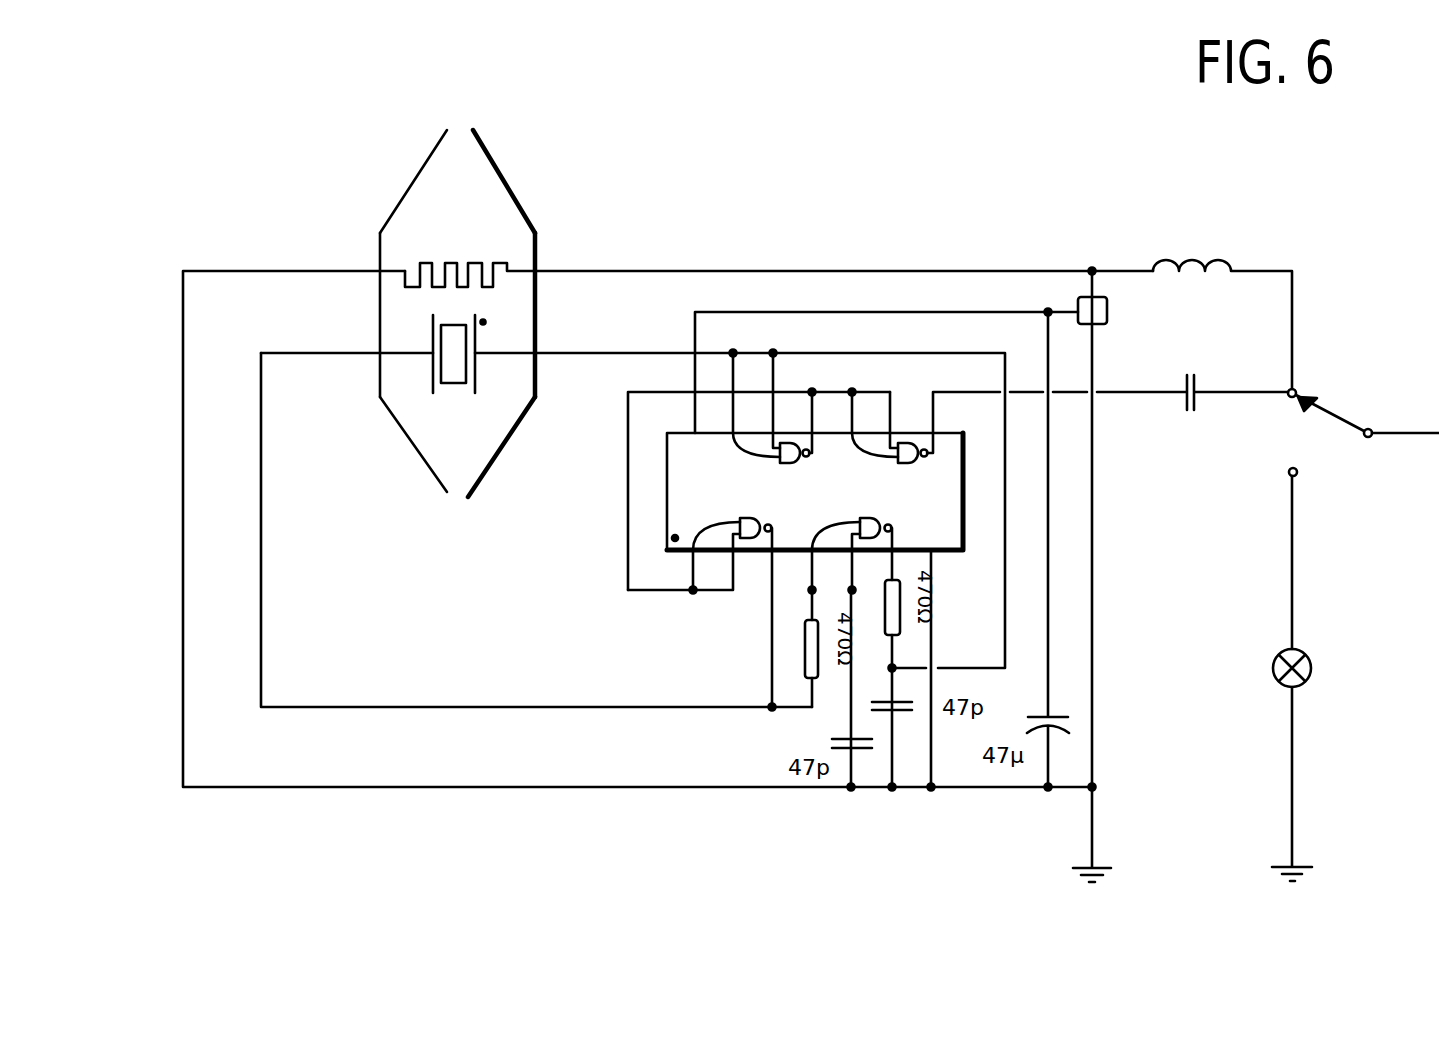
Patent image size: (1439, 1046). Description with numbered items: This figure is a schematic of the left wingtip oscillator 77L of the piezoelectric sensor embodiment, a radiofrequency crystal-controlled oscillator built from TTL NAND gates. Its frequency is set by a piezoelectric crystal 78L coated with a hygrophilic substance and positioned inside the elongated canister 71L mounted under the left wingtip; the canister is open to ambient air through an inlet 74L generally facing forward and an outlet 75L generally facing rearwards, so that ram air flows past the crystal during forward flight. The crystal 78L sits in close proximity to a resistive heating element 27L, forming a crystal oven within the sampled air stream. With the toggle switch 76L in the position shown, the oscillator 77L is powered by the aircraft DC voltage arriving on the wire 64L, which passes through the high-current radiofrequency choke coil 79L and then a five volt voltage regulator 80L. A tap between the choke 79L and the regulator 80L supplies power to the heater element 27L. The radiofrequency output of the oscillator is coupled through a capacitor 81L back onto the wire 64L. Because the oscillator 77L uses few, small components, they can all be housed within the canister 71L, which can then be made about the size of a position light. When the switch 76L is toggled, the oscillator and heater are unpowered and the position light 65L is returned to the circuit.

The resistive heating element 27L is at (430, 262).
The canister 71L is at (500, 165).
The inlet 74L is at (462, 128).
The outlet 75L is at (457, 505).
The piezoelectric crystal 78L is at (433, 383).
The wingtip oscillator 77L is at (605, 530).
The voltage regulator 80L is at (1077, 298).
The radiofrequency choke coil 79L is at (1193, 265).
The capacitor 81L is at (1183, 403).
The toggle switch 76L is at (1340, 413).
The wire 64L is at (1420, 433).
The position light 65L is at (1311, 666).